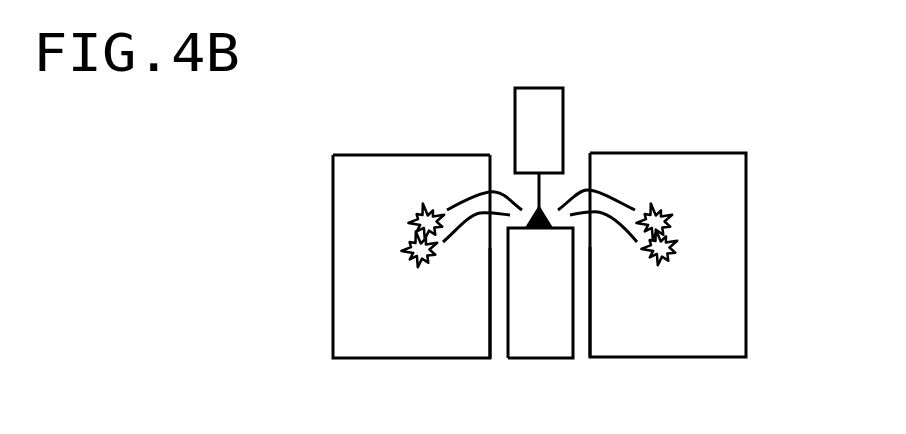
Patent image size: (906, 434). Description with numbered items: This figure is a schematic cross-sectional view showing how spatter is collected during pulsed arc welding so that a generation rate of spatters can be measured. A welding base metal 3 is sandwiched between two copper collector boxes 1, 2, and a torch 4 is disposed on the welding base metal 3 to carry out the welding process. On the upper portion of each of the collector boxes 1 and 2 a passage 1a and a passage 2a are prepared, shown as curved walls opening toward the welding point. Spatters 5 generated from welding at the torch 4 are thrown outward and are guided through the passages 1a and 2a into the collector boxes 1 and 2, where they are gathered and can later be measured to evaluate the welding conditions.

The copper collector box 1 is at (382, 167).
The passage 1a is at (493, 178).
The copper collector box 2 is at (697, 165).
The passage 2a is at (582, 178).
The welding base metal 3 is at (540, 342).
The torch 4 is at (540, 100).
The spatters 5 is at (672, 213).